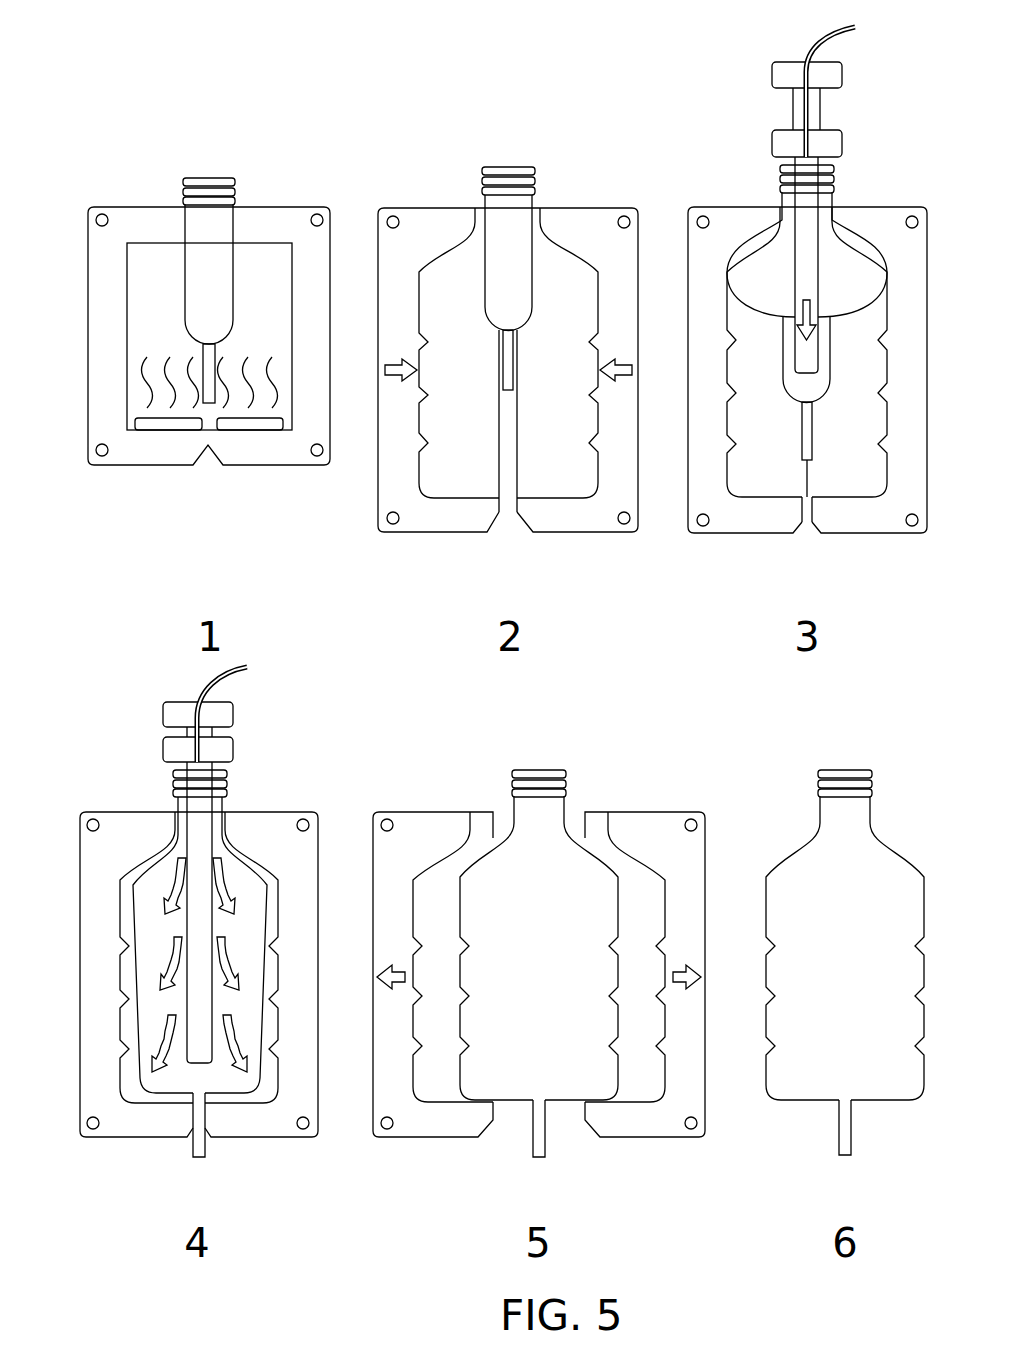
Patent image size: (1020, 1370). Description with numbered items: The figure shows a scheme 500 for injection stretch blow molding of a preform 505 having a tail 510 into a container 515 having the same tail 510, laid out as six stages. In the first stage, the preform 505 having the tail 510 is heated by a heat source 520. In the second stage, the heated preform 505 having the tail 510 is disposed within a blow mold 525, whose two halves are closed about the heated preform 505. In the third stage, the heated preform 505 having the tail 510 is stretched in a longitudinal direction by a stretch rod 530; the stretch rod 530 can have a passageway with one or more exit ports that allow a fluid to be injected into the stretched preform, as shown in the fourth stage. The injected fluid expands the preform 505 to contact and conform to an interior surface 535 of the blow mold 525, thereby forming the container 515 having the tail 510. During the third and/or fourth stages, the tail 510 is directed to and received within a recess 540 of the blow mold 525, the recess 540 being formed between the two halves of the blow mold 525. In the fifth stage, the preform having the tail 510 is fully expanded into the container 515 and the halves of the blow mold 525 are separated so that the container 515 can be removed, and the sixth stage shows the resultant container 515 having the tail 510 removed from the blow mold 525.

The scheme 500 is at (120, 89).
The preform 505 is at (185, 313).
The tail 510 is at (203, 387).
The container 515 is at (593, 838).
The heat source 520 is at (163, 425).
The blow mold 525 is at (447, 532).
The stretch rod 530 is at (887, 253).
The interior surface 535 is at (597, 418).
The recess 540 is at (498, 513).